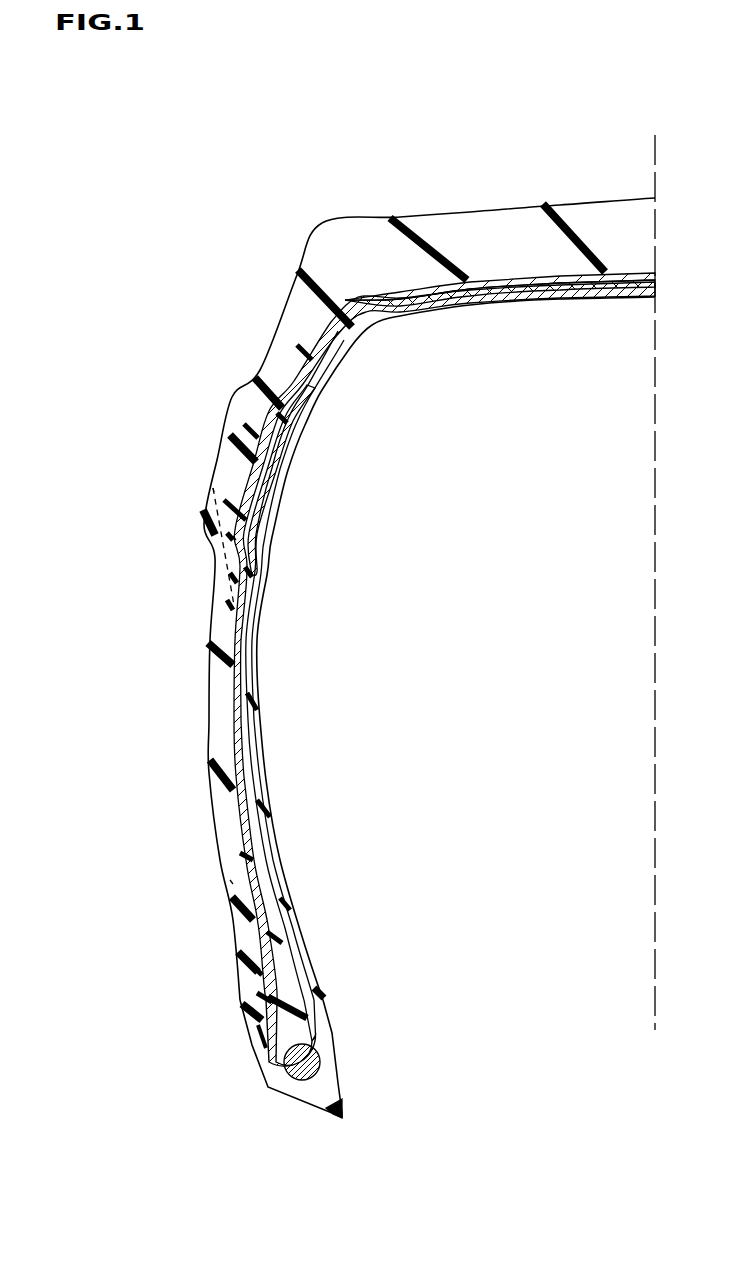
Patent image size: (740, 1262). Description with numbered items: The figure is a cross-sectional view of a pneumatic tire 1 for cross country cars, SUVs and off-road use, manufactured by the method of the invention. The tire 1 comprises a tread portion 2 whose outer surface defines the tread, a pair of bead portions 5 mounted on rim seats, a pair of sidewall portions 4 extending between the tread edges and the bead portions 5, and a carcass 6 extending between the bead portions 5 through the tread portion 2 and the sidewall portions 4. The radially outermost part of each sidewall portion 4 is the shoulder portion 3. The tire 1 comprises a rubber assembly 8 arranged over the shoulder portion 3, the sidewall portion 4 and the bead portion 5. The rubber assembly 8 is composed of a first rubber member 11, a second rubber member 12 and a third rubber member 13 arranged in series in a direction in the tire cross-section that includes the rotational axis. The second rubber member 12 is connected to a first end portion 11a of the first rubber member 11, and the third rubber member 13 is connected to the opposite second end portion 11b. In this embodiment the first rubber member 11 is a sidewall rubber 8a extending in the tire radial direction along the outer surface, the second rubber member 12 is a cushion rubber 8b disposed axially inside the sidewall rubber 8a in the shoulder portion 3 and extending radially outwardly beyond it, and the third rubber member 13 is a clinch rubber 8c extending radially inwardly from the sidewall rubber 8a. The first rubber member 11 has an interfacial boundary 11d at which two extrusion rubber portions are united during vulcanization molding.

The pneumatic tire 1 is at (250, 248).
The tread portion 2 is at (490, 242).
The shoulder portion 3 is at (238, 380).
The sidewall portion 4 is at (202, 584).
The bead portion 5 is at (224, 966).
The carcass 6 is at (240, 642).
The rubber assembly 8 is at (222, 632).
The sidewall rubber 8a is at (212, 710).
The cushion rubber 8b is at (255, 430).
The clinch rubber 8c is at (250, 980).
The first rubber member 11 is at (238, 639).
The first end portion 11a is at (235, 538).
The second end portion 11b is at (232, 882).
The interfacial boundary 11d is at (213, 491).
The second rubber member 12 is at (282, 378).
The third rubber member 13 is at (240, 902).